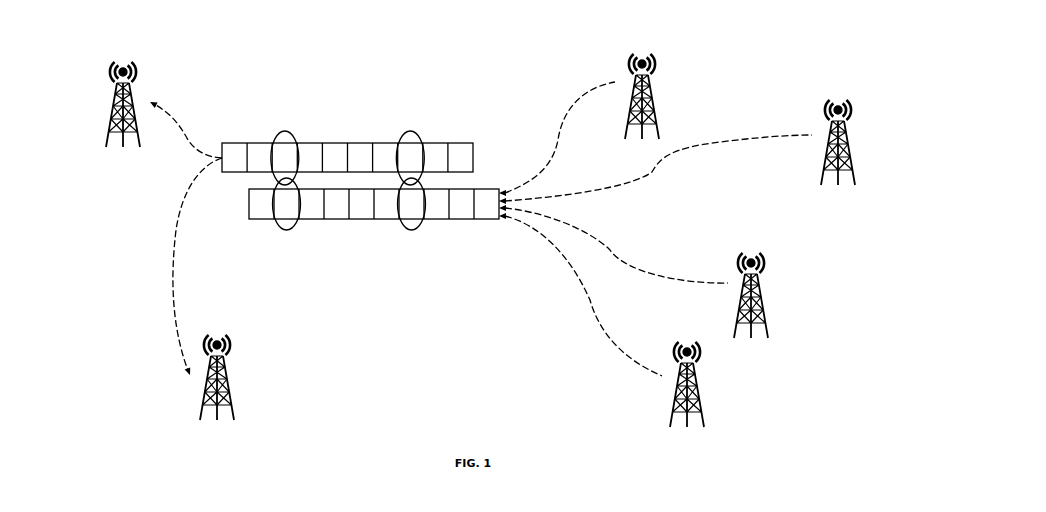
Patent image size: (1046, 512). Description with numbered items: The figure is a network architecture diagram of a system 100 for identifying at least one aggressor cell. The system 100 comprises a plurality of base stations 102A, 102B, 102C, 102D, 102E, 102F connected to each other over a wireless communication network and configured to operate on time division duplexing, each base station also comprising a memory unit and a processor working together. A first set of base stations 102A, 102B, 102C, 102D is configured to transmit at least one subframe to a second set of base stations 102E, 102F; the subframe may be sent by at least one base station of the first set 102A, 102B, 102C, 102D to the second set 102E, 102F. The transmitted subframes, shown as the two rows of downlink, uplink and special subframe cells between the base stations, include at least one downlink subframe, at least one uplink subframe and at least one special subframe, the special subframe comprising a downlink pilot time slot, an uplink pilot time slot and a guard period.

The system 100 is at (890, 73).
The base station 102A is at (655, 91).
The base station 102B is at (850, 143).
The base station 102C is at (762, 296).
The base station 102D is at (700, 387).
The base station 102E is at (228, 390).
The base station 102F is at (113, 112).